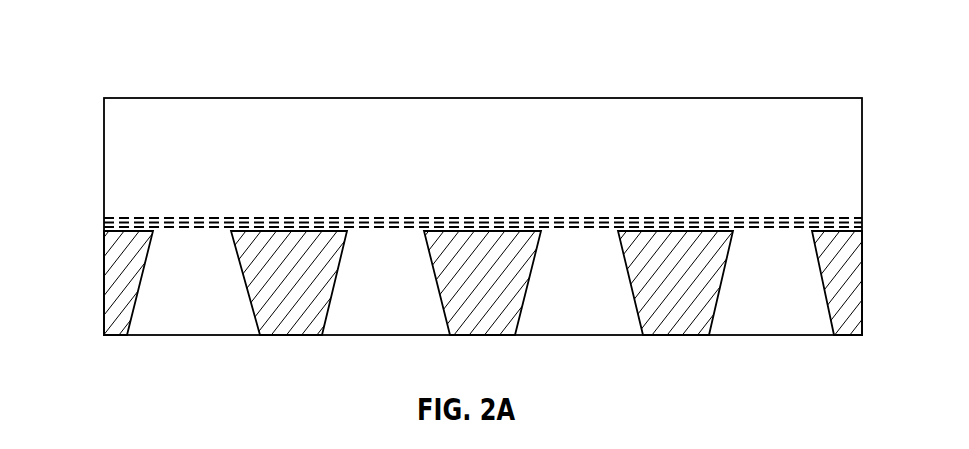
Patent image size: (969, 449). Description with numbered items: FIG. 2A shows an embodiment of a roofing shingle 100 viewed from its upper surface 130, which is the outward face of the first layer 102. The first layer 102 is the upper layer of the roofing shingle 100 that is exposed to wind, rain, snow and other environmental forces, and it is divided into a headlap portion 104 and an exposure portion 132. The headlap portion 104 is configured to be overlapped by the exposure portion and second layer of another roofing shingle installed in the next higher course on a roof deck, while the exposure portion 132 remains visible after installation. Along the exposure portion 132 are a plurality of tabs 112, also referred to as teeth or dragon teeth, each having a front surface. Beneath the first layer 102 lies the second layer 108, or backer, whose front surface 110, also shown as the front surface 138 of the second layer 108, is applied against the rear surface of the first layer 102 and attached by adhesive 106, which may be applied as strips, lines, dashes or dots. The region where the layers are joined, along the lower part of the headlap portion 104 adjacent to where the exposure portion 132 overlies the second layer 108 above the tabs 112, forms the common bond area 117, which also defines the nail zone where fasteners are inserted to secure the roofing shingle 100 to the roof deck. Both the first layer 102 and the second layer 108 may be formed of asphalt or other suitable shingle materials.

The roofing shingle 100 is at (201, 33).
The first layer 102 is at (119, 177).
The headlap portion 104 is at (120, 130).
The adhesive 106 is at (104, 218).
The second layer 108 is at (119, 327).
The front surface 110 is at (120, 263).
The tabs 112 is at (148, 307).
The common bond area 117 is at (143, 209).
The upper surface 130 is at (431, 119).
The exposure portion 132 is at (800, 260).
The front surface of the second layer 138 is at (672, 305).